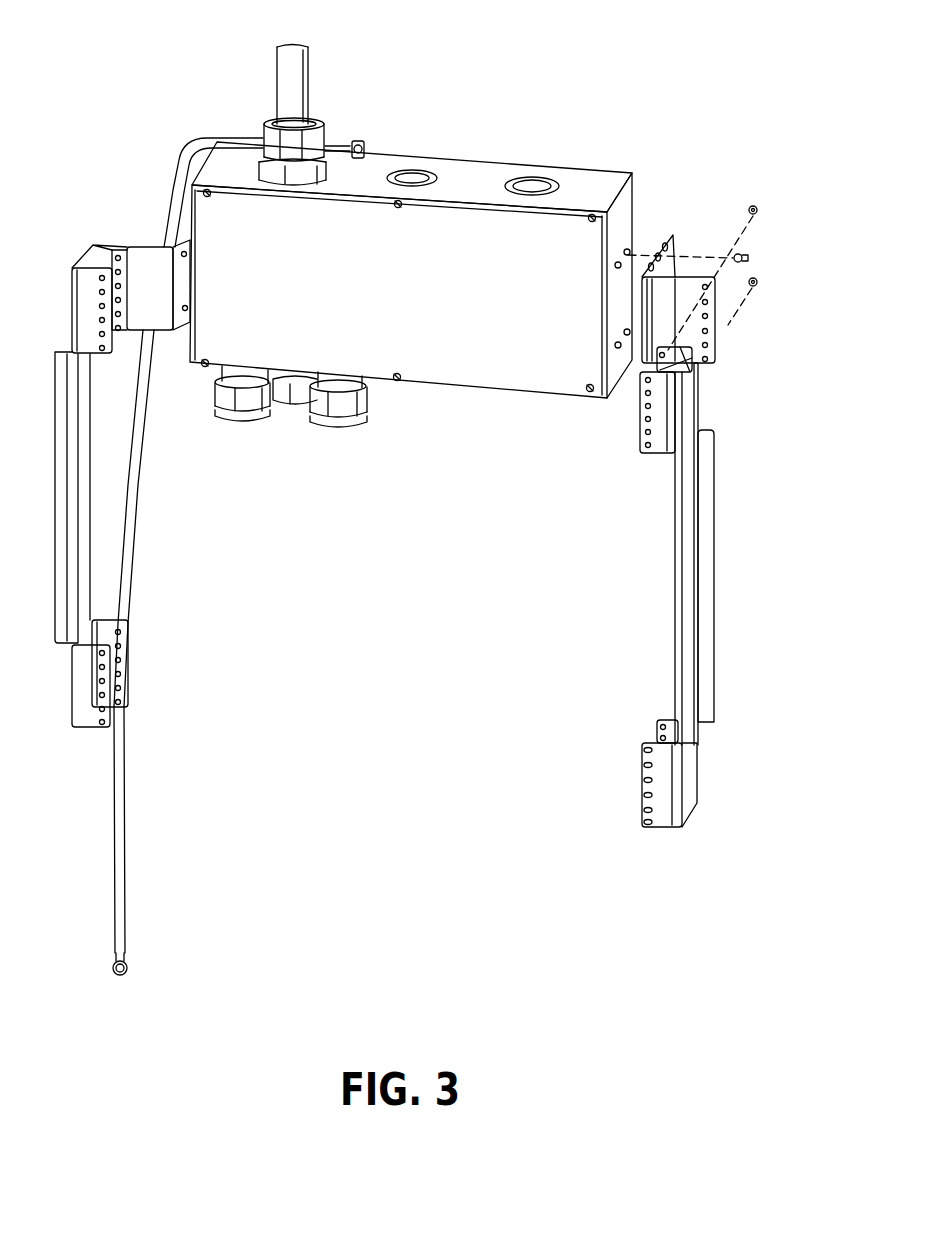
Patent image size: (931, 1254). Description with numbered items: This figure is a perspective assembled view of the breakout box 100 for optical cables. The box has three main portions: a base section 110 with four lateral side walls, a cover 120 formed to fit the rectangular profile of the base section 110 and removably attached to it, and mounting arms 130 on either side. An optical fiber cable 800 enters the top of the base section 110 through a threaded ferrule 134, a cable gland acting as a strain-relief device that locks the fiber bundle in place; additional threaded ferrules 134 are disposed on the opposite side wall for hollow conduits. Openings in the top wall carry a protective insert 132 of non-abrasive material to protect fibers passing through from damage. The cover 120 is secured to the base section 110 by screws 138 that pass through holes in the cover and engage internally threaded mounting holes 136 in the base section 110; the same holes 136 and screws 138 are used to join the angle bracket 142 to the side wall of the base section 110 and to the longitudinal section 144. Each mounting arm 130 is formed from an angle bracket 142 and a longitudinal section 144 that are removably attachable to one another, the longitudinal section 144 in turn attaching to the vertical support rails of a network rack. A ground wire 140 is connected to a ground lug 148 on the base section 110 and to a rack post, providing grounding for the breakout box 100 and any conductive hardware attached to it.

The breakout box 100 is at (158, 92).
The base section 110 is at (603, 170).
The cover 120 is at (505, 378).
The mounting arms 130 is at (38, 570).
The protective insert 132 is at (530, 172).
The threaded ferrule 134 is at (323, 122).
The internally threaded mounting holes 136 is at (628, 253).
The screws 138 is at (753, 205).
The ground wire 140 is at (133, 498).
The angle bracket 142 is at (705, 328).
The longitudinal section 144 is at (705, 458).
The ground lug 148 is at (363, 145).
The optical fiber cable 800 is at (293, 63).